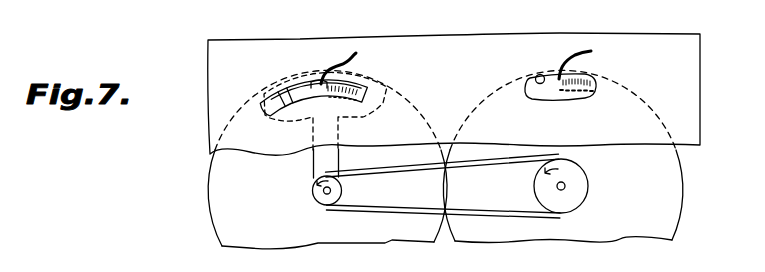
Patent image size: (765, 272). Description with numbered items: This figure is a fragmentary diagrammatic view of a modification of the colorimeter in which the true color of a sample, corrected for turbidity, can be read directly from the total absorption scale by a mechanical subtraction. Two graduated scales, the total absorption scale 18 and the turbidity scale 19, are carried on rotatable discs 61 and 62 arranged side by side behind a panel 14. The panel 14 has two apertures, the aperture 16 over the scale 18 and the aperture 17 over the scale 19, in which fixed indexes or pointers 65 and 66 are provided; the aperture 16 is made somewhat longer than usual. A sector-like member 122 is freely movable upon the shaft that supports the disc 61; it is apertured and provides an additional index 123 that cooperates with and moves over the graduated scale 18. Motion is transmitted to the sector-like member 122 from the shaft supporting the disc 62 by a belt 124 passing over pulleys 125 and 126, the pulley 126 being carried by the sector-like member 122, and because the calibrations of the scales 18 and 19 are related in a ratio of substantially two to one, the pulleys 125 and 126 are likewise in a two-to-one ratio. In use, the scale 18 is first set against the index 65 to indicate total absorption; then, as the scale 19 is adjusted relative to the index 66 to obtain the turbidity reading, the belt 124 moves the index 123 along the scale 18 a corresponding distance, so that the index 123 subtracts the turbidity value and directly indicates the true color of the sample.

The panel 14 is at (453, 22).
The aperture 16 is at (263, 102).
The graduated scale 18 is at (352, 94).
The index 123 is at (316, 82).
The index 65 is at (347, 65).
The aperture 17 is at (538, 74).
The index 66 is at (584, 63).
The calibrated scale 19 is at (553, 83).
The sector-like member 122 is at (313, 164).
The belt 124 is at (492, 168).
The pulley 125 is at (578, 198).
The pulley 126 is at (317, 201).
The disc 61 is at (240, 220).
The disc 62 is at (627, 226).